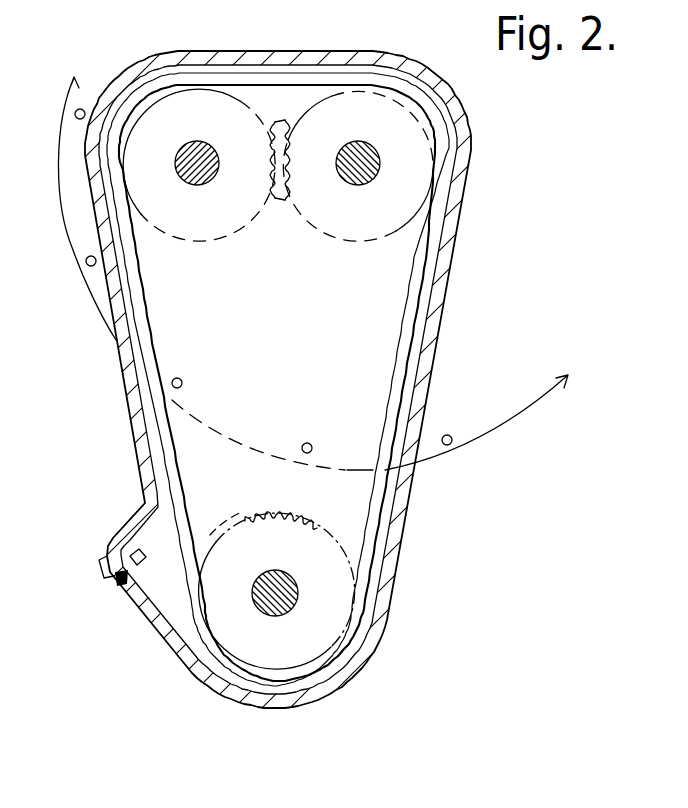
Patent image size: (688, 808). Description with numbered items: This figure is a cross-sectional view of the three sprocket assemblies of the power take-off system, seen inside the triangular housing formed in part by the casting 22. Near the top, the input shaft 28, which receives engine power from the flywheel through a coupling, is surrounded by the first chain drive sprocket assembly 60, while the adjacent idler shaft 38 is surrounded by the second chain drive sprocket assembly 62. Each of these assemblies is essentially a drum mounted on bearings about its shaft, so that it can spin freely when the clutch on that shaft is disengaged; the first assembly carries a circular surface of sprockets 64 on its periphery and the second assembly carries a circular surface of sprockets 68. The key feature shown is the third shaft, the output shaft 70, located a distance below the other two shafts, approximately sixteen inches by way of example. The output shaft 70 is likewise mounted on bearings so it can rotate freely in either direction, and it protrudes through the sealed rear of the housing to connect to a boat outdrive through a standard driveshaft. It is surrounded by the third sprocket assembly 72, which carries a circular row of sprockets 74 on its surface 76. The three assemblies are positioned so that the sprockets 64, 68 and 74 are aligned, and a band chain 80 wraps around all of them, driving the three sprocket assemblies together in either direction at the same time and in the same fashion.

The casting 22 is at (397, 527).
The input shaft 28 is at (212, 176).
The idler shaft 38 is at (372, 181).
The first chain drive sprocket assembly 60 is at (197, 220).
The second chain drive sprocket assembly 62 is at (342, 237).
The sprockets 64 is at (291, 138).
The sprockets 68 is at (254, 216).
The output shaft 70 is at (260, 608).
The third sprocket assembly 72 is at (312, 524).
The sprockets 74 is at (251, 510).
The surface 76 is at (214, 530).
The band chain 80 is at (440, 320).